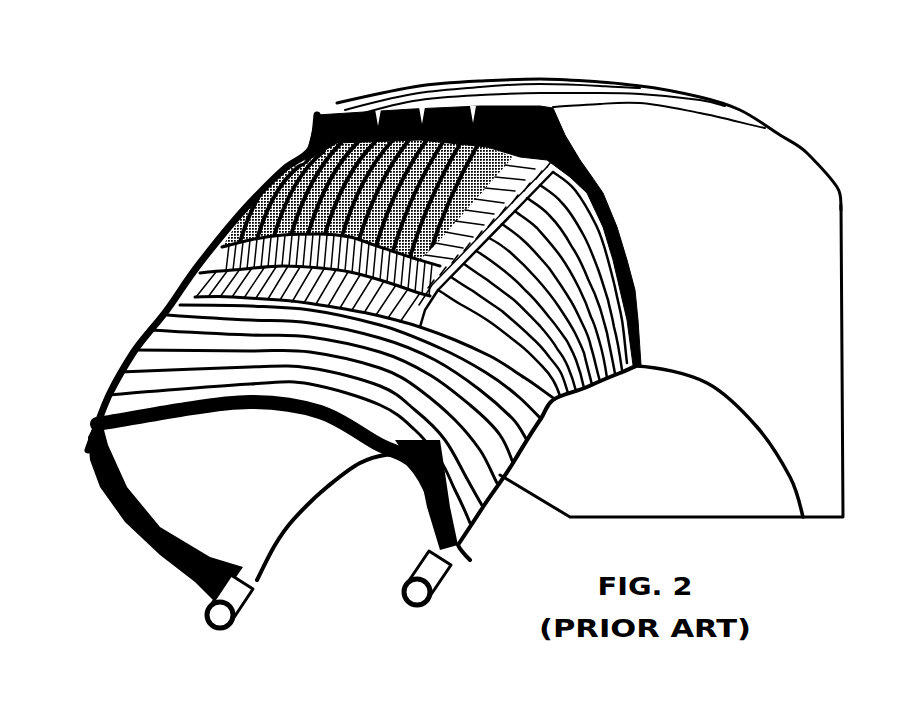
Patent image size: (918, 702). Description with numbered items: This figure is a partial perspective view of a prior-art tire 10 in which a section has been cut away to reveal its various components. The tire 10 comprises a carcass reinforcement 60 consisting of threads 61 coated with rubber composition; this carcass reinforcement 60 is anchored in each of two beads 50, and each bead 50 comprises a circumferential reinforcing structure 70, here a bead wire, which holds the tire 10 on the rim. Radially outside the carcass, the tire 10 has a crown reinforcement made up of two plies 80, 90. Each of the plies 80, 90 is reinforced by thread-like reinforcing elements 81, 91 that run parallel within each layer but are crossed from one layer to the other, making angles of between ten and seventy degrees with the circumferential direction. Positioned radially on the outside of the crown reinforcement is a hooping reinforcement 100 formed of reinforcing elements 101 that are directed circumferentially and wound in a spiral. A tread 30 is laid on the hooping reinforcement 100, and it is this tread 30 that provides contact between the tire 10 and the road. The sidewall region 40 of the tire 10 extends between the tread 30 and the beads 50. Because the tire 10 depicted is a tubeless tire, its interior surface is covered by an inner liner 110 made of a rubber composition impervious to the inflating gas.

The tire 10 is at (762, 85).
The tread 30 is at (367, 107).
The sidewall 40 is at (670, 258).
The beads 50 is at (389, 555).
The carcass reinforcement 60 is at (60, 300).
The threads 61 is at (180, 353).
The circumferential reinforcing structures 70 is at (400, 593).
The ply 80 is at (100, 215).
The thread-like reinforcing elements 81 is at (215, 262).
The ply 90 is at (112, 127).
The thread-like reinforcing elements 91 is at (262, 212).
The hooping reinforcement 100 is at (167, 42).
The reinforcing elements 101 is at (312, 160).
The inner liner 110 is at (196, 486).